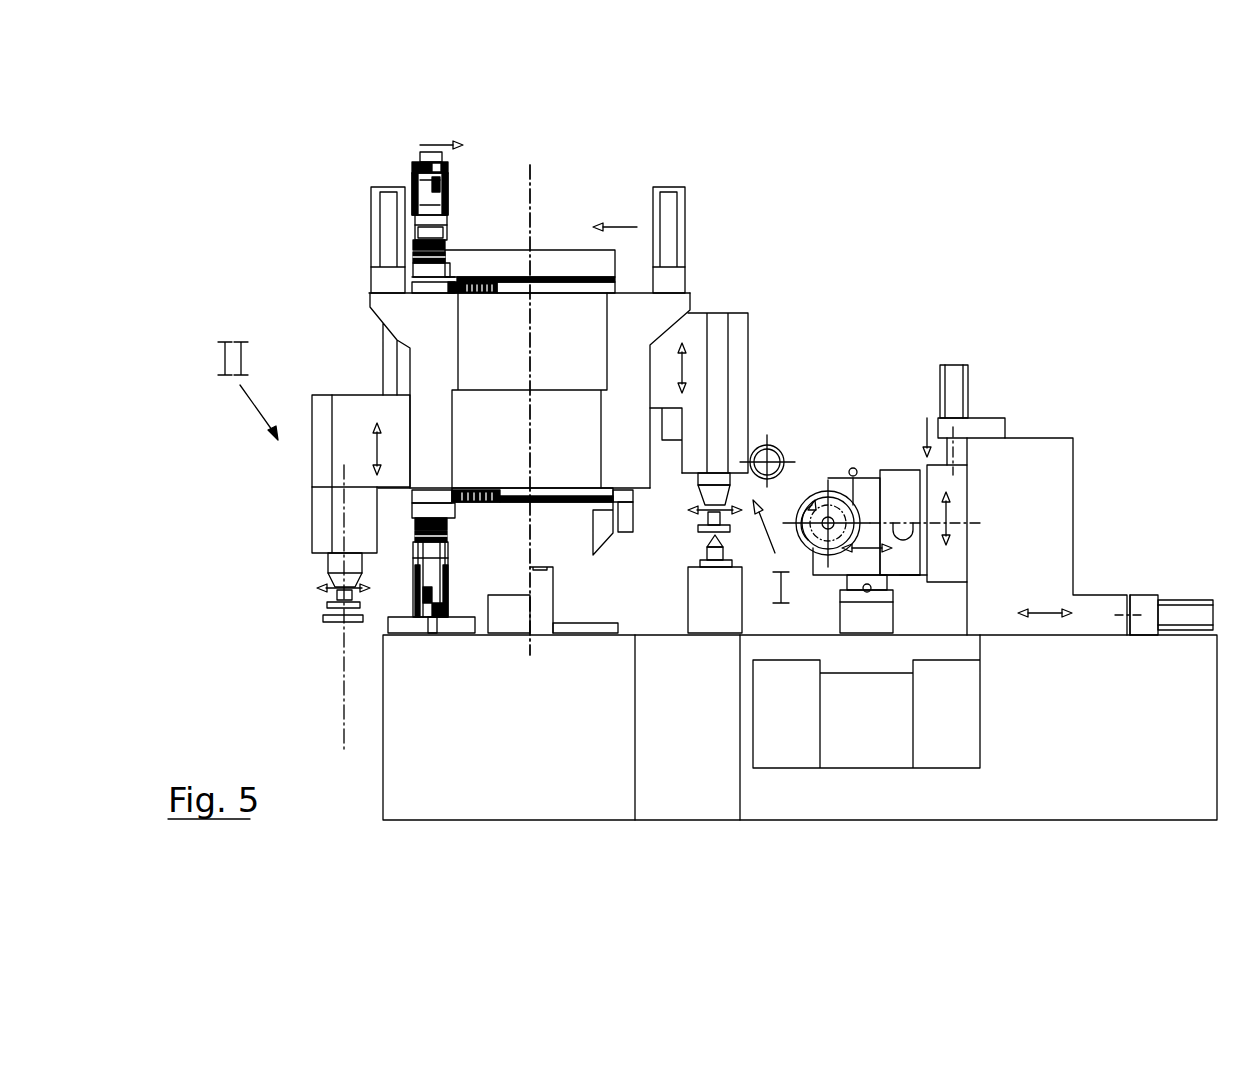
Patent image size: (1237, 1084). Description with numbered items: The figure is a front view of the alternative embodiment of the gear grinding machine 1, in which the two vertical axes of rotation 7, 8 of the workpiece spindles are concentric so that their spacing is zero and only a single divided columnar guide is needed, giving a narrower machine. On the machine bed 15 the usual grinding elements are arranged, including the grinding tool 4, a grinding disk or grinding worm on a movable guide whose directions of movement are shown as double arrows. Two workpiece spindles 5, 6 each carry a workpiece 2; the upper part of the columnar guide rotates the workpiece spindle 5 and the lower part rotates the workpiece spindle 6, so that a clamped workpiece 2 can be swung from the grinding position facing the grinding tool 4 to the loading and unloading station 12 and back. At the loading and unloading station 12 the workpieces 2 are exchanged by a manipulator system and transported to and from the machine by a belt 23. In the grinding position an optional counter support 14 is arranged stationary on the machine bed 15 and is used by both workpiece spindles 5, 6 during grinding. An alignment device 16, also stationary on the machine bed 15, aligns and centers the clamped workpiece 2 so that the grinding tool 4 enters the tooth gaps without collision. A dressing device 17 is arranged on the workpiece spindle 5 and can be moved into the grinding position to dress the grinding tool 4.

The gear grinding machine 1 is at (867, 186).
The workpiece 2 is at (333, 605).
The grinding tool 4 is at (832, 505).
The workpiece spindle 5 is at (705, 478).
The workpiece spindle 6 is at (338, 560).
The axis of rotation 7 is at (535, 188).
The axis of rotation 8 is at (535, 188).
The loading and unloading station 12 is at (290, 579).
The counter support 14 is at (722, 613).
The machine bed 15 is at (1068, 783).
The alignment device 16 is at (553, 610).
The dressing device 17 is at (767, 445).
The belt 23 is at (333, 623).